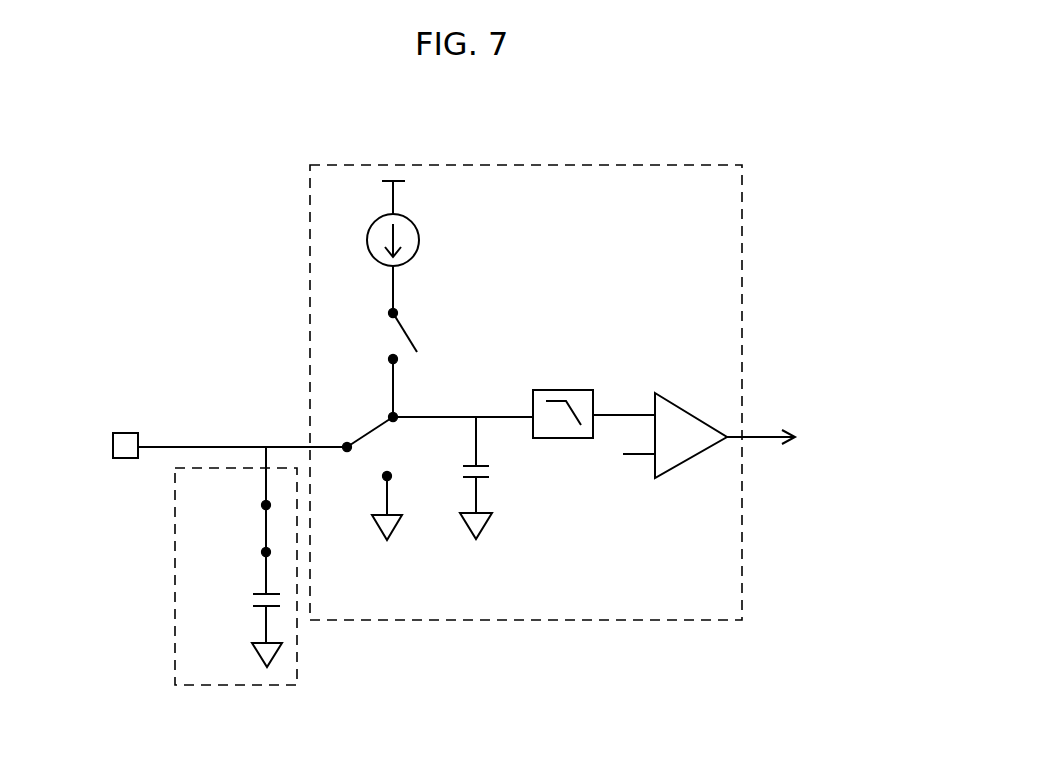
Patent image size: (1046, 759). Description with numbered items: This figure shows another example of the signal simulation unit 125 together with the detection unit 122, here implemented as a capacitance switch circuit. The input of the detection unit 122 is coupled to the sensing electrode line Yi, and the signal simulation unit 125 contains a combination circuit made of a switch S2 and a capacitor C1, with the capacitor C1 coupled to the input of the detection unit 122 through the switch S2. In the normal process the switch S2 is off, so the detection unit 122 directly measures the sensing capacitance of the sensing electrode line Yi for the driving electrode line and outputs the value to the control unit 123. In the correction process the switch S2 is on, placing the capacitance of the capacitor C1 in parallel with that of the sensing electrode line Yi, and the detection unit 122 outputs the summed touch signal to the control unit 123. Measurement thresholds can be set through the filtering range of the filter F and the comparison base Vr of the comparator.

The detection unit 122 is at (552, 427).
The control unit 123 is at (853, 453).
The signal simulation unit 125 is at (205, 566).
The sensing electrode line Yi is at (113, 440).
The switch S2 is at (264, 534).
The capacitor C1 is at (238, 617).
The filter F is at (557, 390).
The comparison base Vr is at (621, 454).